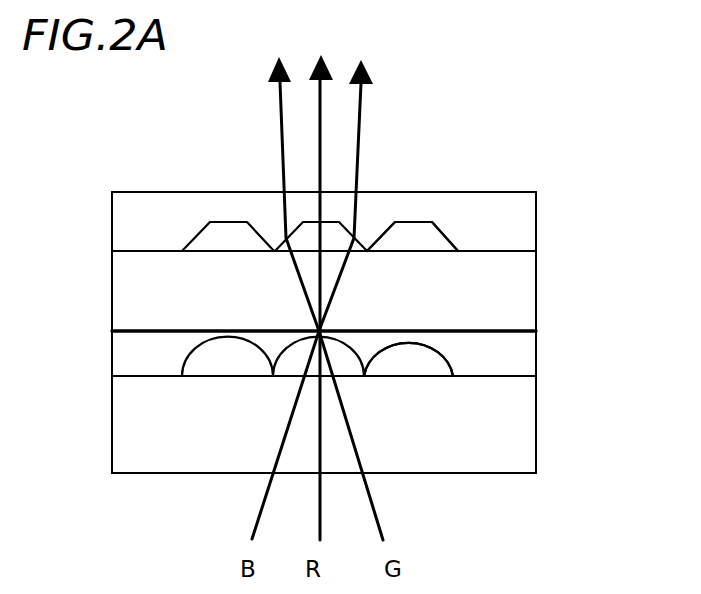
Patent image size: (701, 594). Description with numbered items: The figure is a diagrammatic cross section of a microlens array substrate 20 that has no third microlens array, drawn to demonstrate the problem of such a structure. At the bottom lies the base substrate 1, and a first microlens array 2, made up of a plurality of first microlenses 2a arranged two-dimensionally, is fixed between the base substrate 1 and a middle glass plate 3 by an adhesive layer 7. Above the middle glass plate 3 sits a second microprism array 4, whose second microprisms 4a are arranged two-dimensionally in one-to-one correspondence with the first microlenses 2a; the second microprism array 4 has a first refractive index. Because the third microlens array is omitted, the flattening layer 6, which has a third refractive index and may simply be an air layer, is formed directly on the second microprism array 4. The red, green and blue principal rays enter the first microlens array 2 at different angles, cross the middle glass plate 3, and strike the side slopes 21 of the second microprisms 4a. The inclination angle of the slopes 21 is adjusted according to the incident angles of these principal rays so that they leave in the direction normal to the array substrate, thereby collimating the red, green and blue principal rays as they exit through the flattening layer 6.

The base substrate 1 is at (485, 425).
The first microlens array 2 is at (430, 377).
The first microlens 2a is at (422, 365).
The middle glass plate 3 is at (497, 292).
The second microprism array 4 is at (418, 229).
The second microprism 4a is at (430, 252).
The flattening layer 6 is at (490, 197).
The adhesive layer 7 is at (515, 353).
The microlens array substrate 20 is at (443, 100).
The slope 21 is at (272, 250).